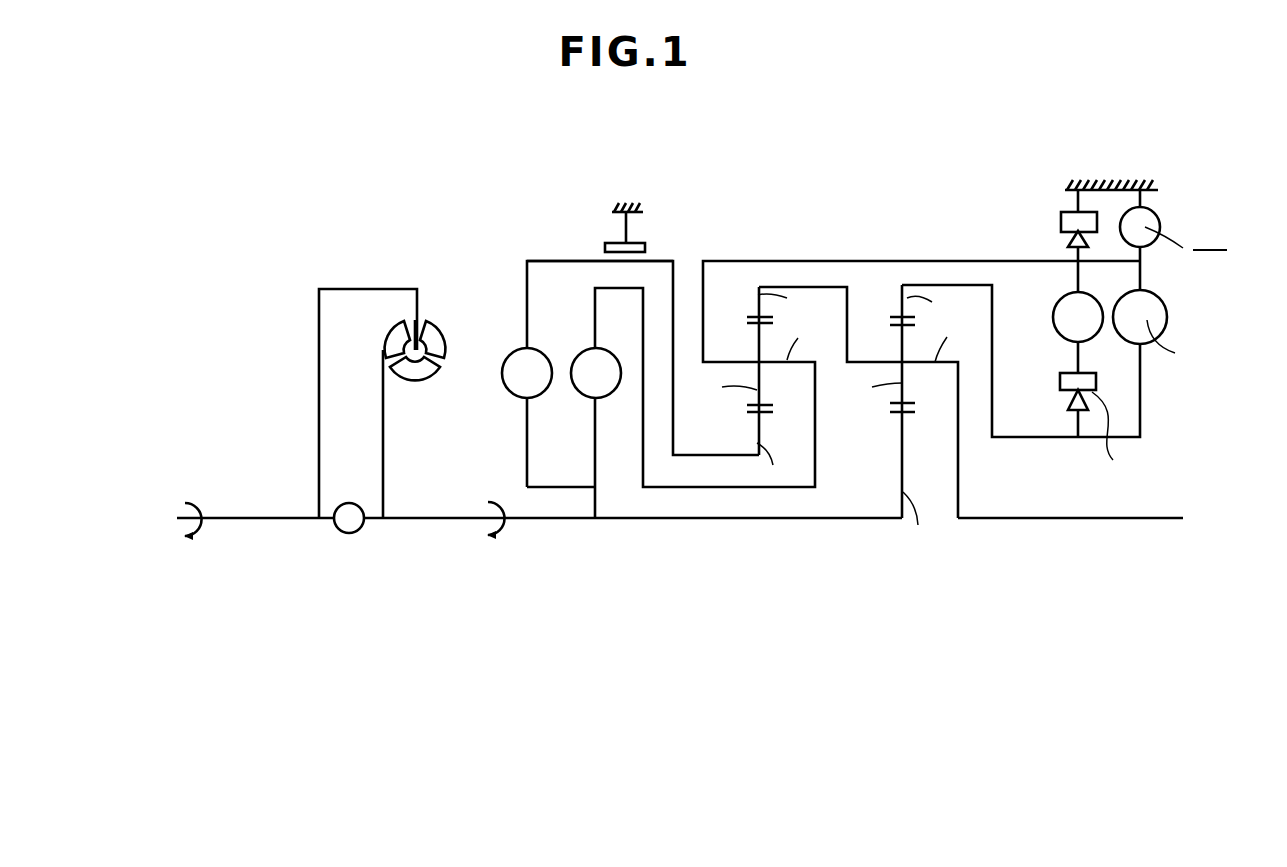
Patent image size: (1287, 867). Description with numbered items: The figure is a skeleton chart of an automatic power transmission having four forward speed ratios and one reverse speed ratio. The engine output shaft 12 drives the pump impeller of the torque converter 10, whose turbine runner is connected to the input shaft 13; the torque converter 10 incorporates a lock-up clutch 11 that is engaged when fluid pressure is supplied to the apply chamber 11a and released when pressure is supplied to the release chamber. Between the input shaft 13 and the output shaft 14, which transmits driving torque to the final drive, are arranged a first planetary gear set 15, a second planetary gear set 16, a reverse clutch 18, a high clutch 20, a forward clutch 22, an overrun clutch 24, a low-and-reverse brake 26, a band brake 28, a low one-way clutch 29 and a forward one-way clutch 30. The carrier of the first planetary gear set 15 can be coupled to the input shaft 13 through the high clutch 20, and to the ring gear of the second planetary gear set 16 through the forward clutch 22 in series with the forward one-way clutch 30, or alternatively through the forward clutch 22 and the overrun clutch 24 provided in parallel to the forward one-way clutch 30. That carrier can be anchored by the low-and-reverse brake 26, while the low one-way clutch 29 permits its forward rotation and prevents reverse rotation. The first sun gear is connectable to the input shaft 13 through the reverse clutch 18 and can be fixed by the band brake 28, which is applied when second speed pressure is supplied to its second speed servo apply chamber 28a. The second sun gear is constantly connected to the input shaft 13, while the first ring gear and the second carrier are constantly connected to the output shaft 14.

The torque converter 10 is at (440, 312).
The lock-up clutch 11 is at (350, 533).
The apply chamber 11a is at (378, 315).
The engine output shaft 12 is at (273, 517).
The input shaft 13 is at (447, 520).
The output shaft 14 is at (1017, 515).
The first planetary gear set 15 is at (760, 280).
The second planetary gear set 16 is at (916, 280).
The reverse clutch 18 is at (503, 388).
The high clutch 20 is at (585, 397).
The forward clutch 22 is at (1057, 332).
The overrun clutch 24 is at (1163, 317).
The low-and-reverse brake 26 is at (1163, 215).
The band brake 28 is at (632, 230).
The second speed servo apply chamber 28a is at (578, 247).
The low one-way clutch 29 is at (1063, 220).
The forward one-way clutch 30 is at (1060, 383).